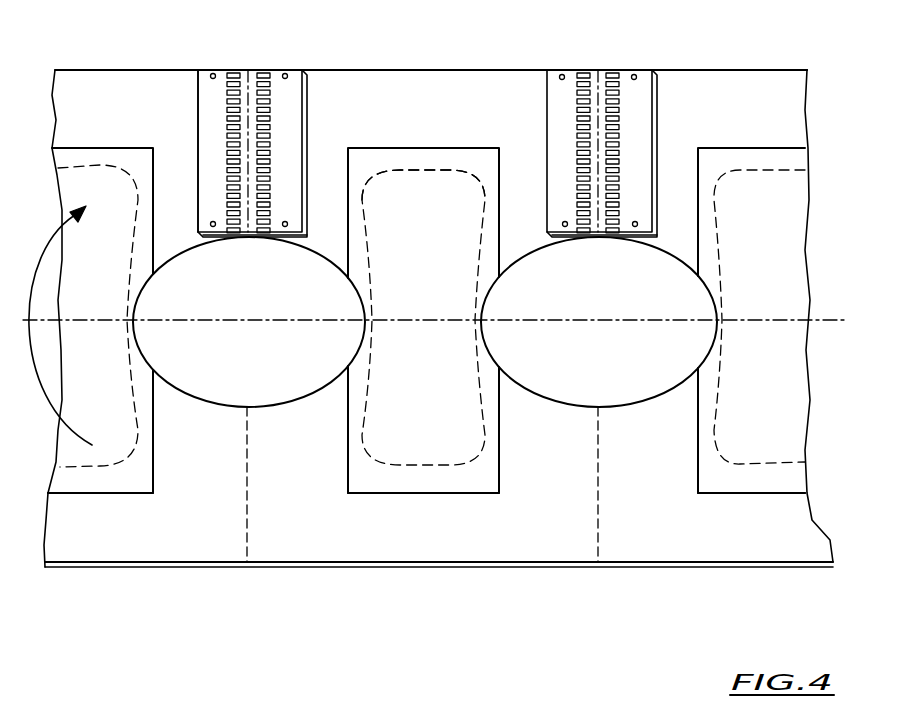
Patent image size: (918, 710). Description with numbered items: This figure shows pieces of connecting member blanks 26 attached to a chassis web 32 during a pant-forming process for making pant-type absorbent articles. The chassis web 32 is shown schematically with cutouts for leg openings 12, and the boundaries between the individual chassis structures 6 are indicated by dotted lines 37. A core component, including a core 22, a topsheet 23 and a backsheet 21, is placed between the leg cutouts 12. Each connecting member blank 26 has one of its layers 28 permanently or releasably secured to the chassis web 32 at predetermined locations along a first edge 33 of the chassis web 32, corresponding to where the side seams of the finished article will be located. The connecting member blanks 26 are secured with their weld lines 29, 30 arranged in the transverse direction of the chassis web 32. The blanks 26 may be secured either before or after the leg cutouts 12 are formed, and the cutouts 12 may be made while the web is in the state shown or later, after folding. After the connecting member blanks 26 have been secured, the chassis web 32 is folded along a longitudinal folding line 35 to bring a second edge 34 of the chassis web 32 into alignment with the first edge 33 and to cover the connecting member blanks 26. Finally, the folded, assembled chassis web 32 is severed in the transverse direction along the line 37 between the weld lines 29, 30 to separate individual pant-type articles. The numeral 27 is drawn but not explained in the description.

The chassis structure 6 is at (358, 518).
The leg opening cutout 12 is at (618, 375).
The backsheet 21 is at (370, 455).
The core 22 is at (417, 205).
The topsheet 23 is at (480, 480).
The connecting member blank 26 is at (292, 137).
The pole piece 27 is at (212, 146).
The layer 28 is at (211, 124).
The weld line 29 is at (233, 72).
The weld line 30 is at (262, 72).
The chassis web 32 is at (442, 66).
The first edge 33 is at (501, 66).
The second edge 34 is at (560, 578).
The longitudinal folding line 35 is at (827, 385).
The dotted line 37 is at (247, 490).